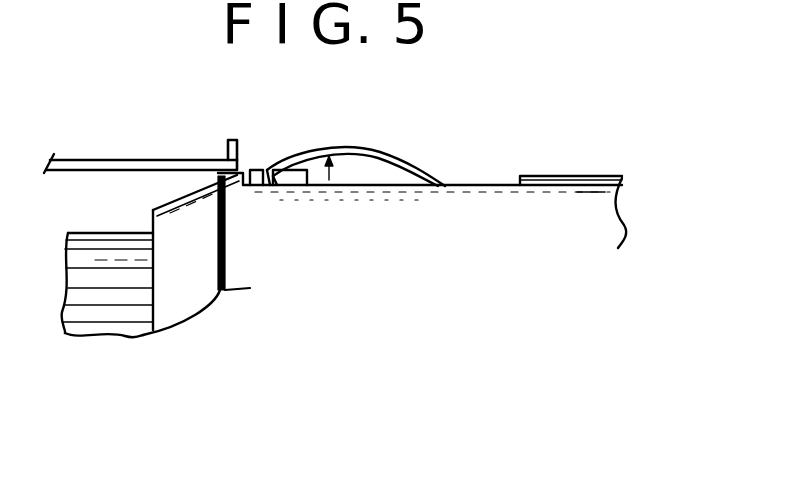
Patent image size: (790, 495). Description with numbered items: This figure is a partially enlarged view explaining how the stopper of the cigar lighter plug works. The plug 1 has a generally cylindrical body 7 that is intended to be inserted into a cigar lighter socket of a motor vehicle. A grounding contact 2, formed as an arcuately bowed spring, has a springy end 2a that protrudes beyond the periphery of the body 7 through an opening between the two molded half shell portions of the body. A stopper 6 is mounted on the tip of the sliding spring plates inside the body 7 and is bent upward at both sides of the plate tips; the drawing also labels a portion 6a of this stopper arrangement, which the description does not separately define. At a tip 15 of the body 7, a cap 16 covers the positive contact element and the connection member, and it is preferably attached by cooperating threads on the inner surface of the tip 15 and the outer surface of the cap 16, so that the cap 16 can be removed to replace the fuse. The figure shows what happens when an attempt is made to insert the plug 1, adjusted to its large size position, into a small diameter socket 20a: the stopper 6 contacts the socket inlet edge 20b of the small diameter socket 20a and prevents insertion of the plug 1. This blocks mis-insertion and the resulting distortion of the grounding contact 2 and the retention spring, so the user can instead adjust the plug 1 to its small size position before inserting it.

The plug 1 is at (591, 170).
The grounding contact 2 is at (412, 163).
The springy end 2a is at (267, 168).
The stopper 6 is at (297, 170).
The terminal block portion 6a is at (254, 186).
The body 7 is at (543, 190).
The tip 15 is at (183, 292).
The cap 16 is at (102, 312).
The small diameter socket 20a is at (110, 159).
The socket inlet edge 20b is at (245, 158).